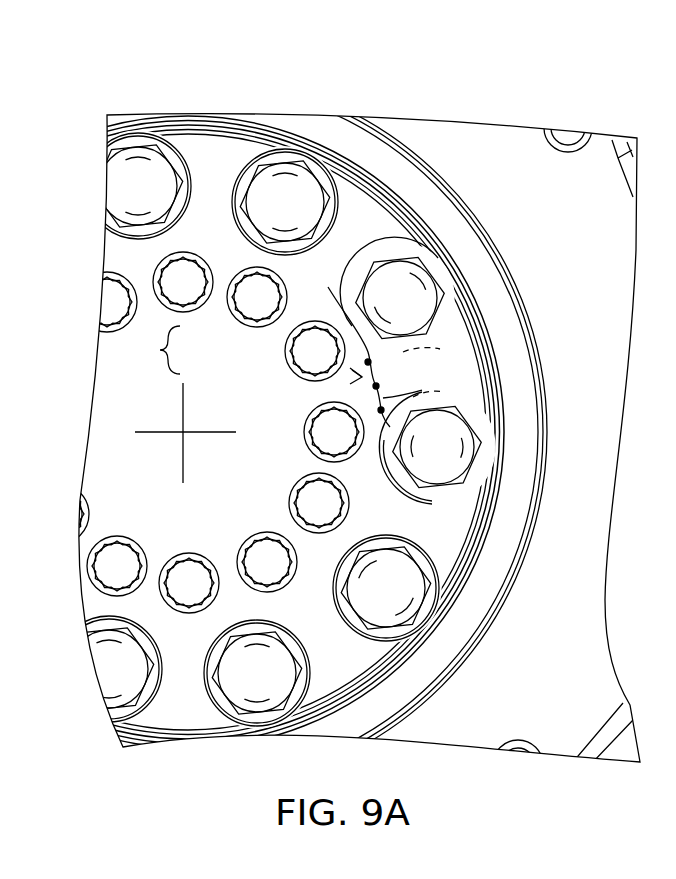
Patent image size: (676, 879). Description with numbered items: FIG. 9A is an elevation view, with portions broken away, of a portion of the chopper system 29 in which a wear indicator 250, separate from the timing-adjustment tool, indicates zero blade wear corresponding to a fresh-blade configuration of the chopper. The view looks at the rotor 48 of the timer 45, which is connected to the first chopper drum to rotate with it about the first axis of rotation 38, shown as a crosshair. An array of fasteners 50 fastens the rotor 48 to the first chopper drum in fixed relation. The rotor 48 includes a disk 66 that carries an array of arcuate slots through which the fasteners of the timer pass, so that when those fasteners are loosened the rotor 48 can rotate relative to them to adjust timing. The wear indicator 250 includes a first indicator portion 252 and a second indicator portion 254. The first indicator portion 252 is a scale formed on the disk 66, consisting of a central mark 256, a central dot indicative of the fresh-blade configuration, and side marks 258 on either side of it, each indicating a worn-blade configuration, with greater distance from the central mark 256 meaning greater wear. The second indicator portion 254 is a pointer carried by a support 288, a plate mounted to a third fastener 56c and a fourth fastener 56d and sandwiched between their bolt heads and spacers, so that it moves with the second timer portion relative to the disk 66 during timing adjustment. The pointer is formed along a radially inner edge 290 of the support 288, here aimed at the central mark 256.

The chopper system 29 is at (193, 760).
The first axis of rotation 38 is at (180, 440).
The timer 45 is at (207, 186).
The rotor 48 is at (225, 215).
The fasteners 50 is at (110, 305).
The disk 66 is at (362, 219).
The third fastener 56c is at (395, 262).
The fourth fastener 56d is at (483, 437).
The wear indicator 250 is at (149, 350).
The first indicator portion 252 is at (350, 370).
The second indicator portion 254 is at (350, 376).
The central mark 256 is at (377, 386).
The side marks 258 is at (385, 410).
The support 288 is at (452, 326).
The radially inner edge 290 is at (342, 344).